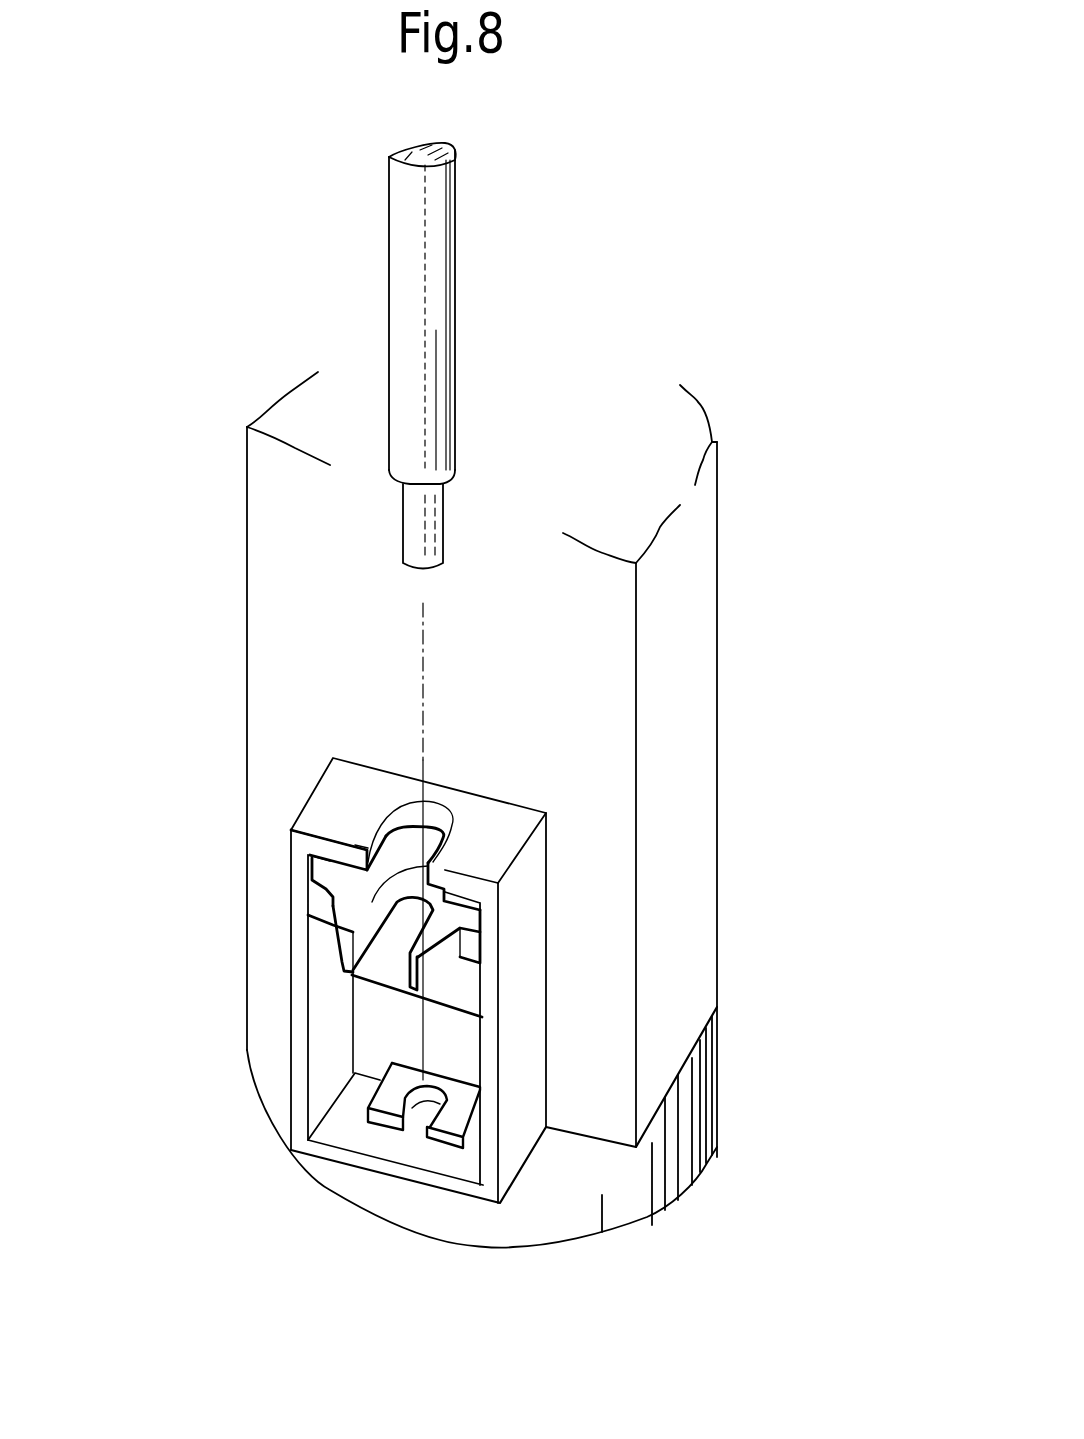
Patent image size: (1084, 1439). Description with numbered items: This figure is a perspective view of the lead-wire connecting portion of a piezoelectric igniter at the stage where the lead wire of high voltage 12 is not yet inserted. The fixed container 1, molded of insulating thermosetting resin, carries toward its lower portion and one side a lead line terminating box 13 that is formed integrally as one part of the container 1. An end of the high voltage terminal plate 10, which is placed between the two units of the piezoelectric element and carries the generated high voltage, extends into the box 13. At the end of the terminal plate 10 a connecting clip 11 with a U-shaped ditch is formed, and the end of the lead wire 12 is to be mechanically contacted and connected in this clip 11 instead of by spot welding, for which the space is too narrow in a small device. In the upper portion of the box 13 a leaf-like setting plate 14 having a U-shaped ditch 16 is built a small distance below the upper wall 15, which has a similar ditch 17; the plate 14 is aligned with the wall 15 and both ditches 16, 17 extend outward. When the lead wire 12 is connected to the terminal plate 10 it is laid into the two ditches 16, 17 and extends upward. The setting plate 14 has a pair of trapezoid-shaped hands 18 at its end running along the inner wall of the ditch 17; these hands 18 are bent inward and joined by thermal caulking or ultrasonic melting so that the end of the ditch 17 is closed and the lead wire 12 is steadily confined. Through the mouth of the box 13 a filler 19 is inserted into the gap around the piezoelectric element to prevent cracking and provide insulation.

The fixed container 1 is at (695, 598).
The high voltage terminal plate 10 is at (383, 1110).
The connecting clip 11 is at (417, 1120).
The lead wire of high voltage 12 is at (444, 250).
The lead line terminating box 13 is at (523, 1157).
The setting plate 14 is at (345, 875).
The upper wall 15 is at (348, 782).
The U-shaped ditch 16 is at (380, 835).
The ditch 17 is at (368, 937).
The hands 18 is at (350, 912).
The filler 19 is at (375, 1033).